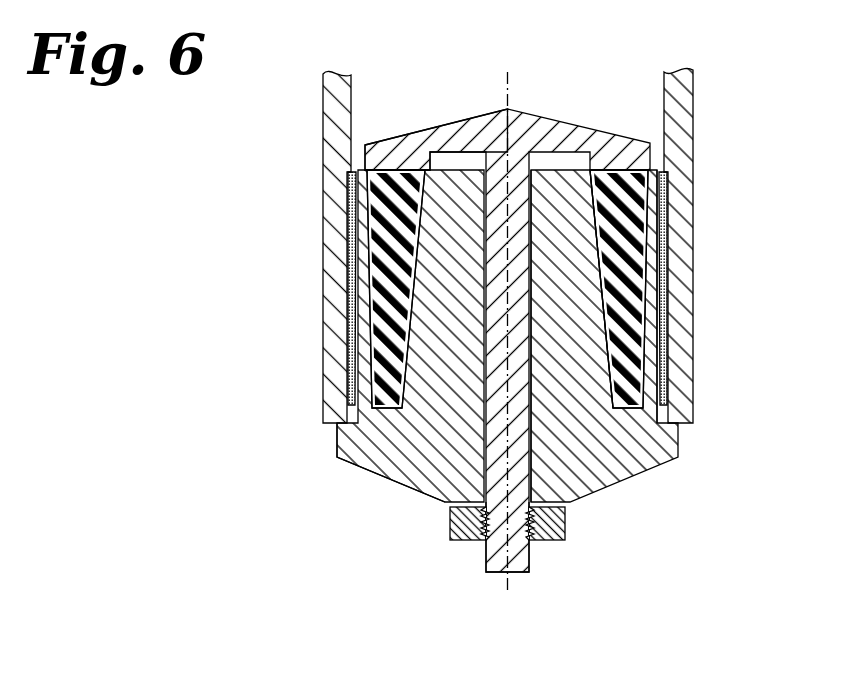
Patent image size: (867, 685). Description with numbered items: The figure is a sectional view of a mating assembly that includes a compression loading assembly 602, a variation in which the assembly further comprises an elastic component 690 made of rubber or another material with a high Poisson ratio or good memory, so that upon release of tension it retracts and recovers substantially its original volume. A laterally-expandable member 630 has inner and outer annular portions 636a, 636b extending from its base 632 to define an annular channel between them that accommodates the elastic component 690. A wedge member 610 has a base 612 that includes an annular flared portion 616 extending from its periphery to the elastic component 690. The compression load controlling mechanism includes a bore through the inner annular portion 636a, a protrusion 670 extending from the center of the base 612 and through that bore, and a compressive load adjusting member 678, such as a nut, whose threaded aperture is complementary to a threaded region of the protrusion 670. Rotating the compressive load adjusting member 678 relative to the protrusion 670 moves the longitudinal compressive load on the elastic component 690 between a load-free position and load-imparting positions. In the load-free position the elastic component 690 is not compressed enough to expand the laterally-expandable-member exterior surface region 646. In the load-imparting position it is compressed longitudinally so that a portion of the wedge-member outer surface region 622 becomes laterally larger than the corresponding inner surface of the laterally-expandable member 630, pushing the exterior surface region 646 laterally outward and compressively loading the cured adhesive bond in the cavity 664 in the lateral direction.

The compression loading assembly 602 is at (520, 344).
The wedge member 610 is at (507, 327).
The base 612 is at (386, 150).
The annular flared portion 616 is at (630, 166).
The wedge-member outer surface region 622 is at (350, 290).
The laterally-expandable member 630 is at (556, 351).
The base 632 is at (365, 465).
The inner annular portion 636a is at (583, 307).
The outer annular portion 636b is at (657, 383).
The laterally-expandable-member exterior surface region 646 is at (665, 272).
The cavity 664 is at (356, 243).
The protrusion 670 is at (525, 560).
The compressive load adjusting member 678 is at (568, 530).
The elastic component 690 is at (385, 213).